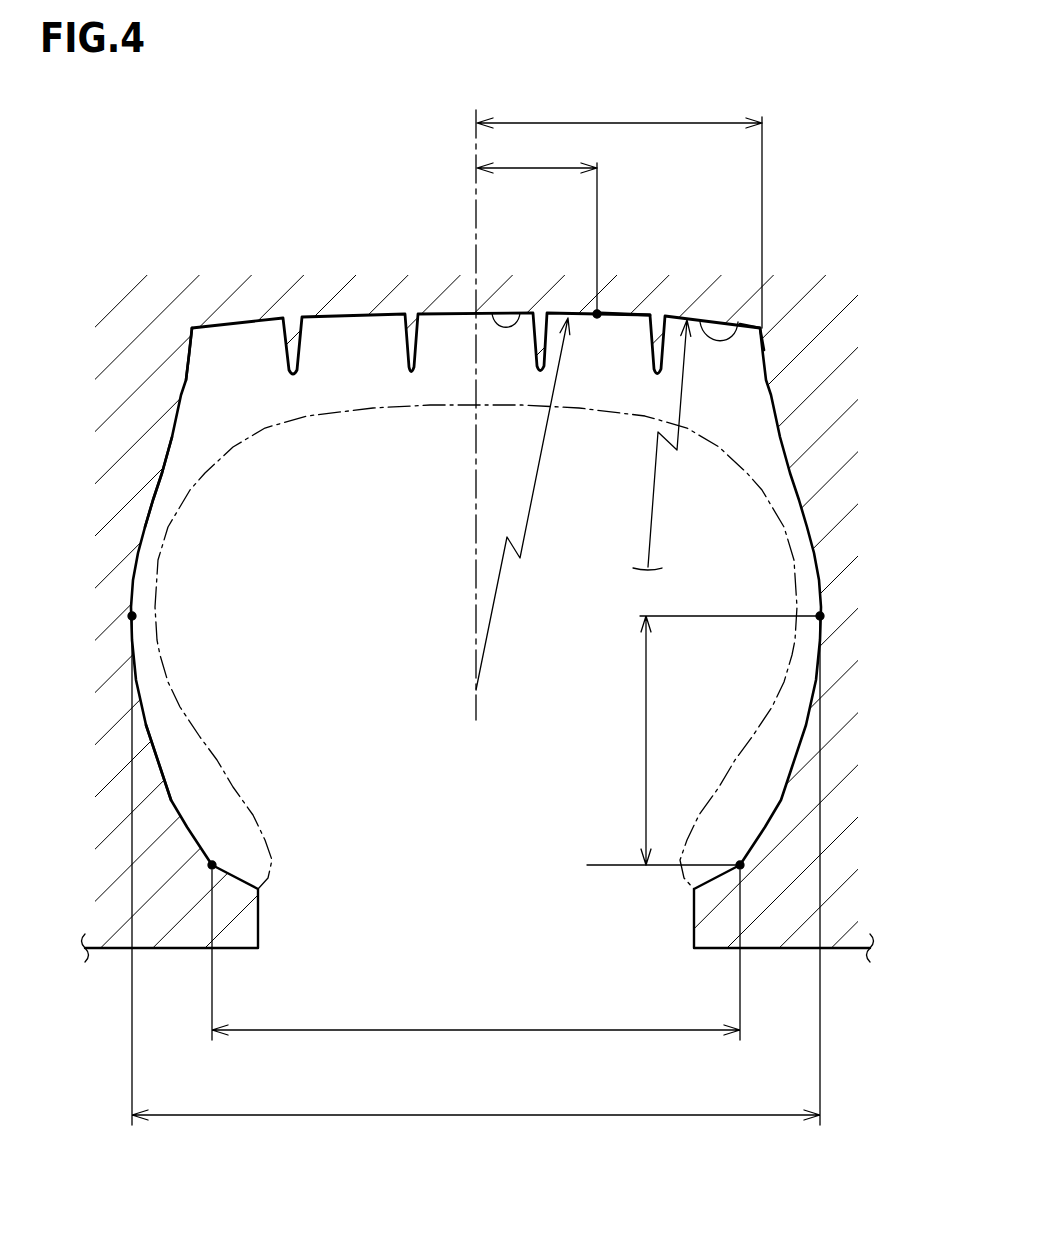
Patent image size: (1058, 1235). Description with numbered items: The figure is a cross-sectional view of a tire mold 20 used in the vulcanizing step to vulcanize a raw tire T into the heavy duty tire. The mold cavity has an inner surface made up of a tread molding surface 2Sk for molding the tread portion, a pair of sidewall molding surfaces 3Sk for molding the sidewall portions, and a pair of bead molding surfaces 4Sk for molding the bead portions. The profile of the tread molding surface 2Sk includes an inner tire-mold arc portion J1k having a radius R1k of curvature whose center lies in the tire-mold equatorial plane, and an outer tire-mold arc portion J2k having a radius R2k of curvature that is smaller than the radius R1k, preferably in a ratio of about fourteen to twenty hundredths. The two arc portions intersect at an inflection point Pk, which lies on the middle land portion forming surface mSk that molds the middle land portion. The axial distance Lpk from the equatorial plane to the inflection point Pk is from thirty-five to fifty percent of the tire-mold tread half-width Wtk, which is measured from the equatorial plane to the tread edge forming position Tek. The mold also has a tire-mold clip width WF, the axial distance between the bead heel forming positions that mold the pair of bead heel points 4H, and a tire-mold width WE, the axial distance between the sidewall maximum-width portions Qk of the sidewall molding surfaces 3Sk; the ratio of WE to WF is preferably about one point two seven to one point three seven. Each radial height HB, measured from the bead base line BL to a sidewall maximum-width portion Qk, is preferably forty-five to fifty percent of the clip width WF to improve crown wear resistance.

The tire mold 20 is at (900, 452).
The raw tire T is at (167, 720).
The tire-mold tread half-width Wtk is at (619, 210).
The distance from the tire-mold equatorial plane to the inflection point Lpk is at (537, 225).
The inner tire-mold arc portion J1k is at (520, 313).
The inflection point Pk is at (600, 313).
The outer tire-mold arc portion J2k is at (738, 322).
The tread edge forming position Tek is at (791, 317).
The tread molding surface 2Sk is at (243, 322).
The sidewall molding surface 3Sk is at (143, 532).
The bead molding surface 4Sk is at (163, 825).
The sidewall maximum-width portion Qk is at (113, 608).
The middle land portion forming surface mSk is at (620, 318).
The radius of curvature of the inner tire-mold arc portion R1k is at (535, 503).
The radius of curvature of the outer tire-mold arc portion R2k is at (655, 498).
The radial height HB is at (722, 740).
The bead base line BL is at (612, 865).
The bead heel point 4H is at (210, 867).
The tire-mold clip width WF is at (476, 970).
The tire-mold width WE is at (476, 887).